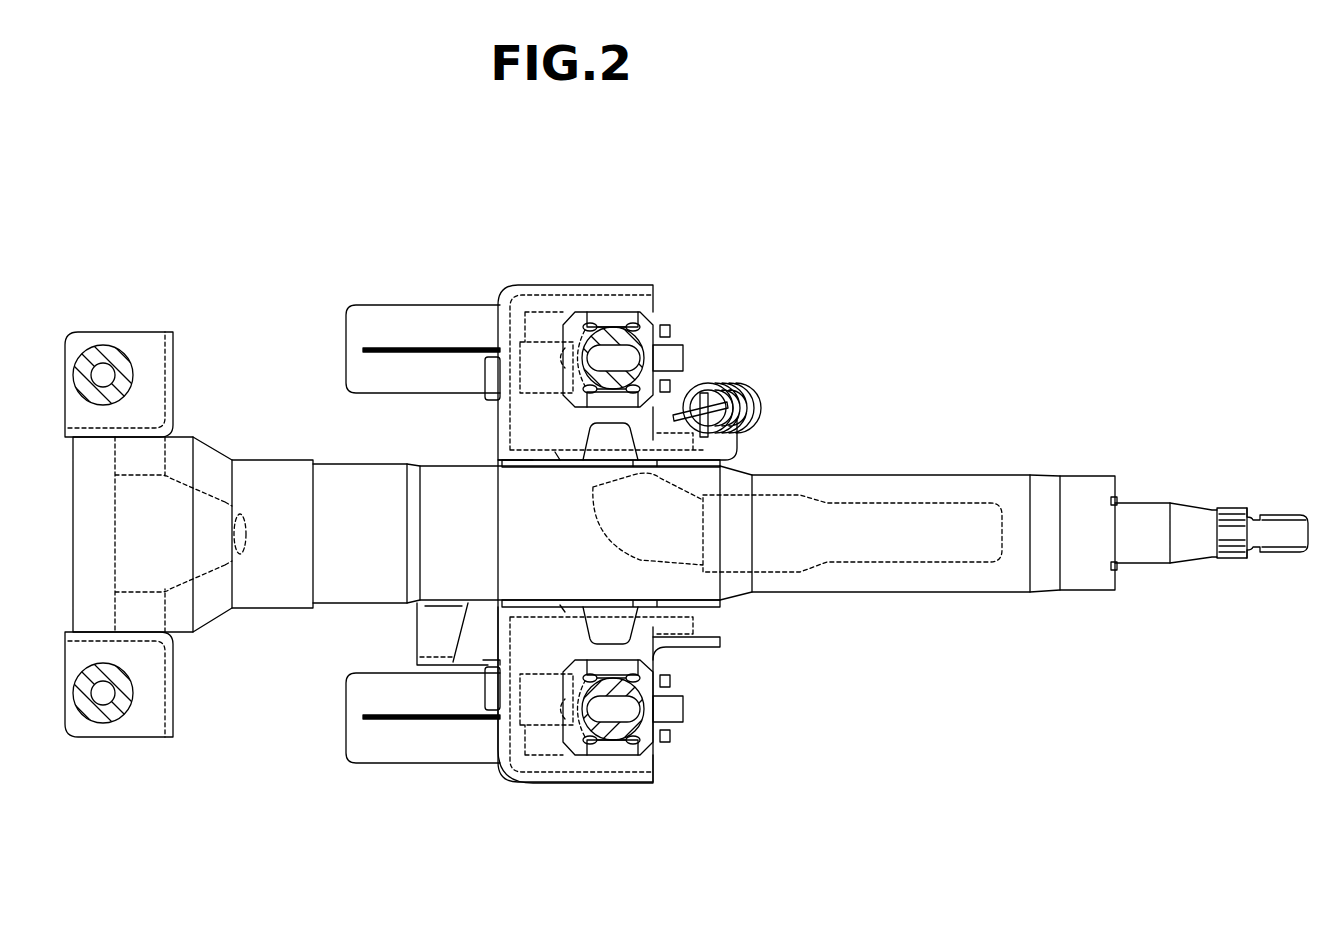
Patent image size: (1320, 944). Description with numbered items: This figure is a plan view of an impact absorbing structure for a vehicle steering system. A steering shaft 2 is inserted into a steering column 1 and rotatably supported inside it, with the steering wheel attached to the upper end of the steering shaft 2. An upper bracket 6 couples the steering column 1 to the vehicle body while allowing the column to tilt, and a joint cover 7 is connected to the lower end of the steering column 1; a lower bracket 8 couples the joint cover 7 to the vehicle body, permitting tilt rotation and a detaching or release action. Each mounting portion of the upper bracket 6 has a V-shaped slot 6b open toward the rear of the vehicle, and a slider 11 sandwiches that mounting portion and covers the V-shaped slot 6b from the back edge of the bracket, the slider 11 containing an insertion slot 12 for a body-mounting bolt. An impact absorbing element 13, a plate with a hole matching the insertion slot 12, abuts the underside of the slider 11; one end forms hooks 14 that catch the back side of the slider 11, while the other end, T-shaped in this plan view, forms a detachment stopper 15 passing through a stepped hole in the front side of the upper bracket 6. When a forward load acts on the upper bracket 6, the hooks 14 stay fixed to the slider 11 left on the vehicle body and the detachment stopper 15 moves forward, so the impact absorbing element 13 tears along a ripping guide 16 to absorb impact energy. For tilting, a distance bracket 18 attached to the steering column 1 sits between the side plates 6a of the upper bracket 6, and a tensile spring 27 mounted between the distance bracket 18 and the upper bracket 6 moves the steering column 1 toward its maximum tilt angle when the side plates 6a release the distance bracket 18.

The steering column 1 is at (988, 473).
The steering shaft 2 is at (1150, 503).
The upper bracket 6 is at (625, 283).
The bracket side plates 6a is at (556, 452).
The V-shaped slot 6b is at (612, 327).
The joint cover 7 is at (262, 460).
The lower bracket 8 is at (112, 332).
The slider 11 is at (690, 355).
The insertion slot 12 is at (655, 340).
The impact absorbing element 13 is at (413, 305).
The hooks 14 is at (668, 330).
The detachment stopper 15 is at (495, 393).
The ripping guide 16 is at (461, 348).
The distance bracket 18 is at (740, 455).
The tensile spring 27 is at (765, 400).